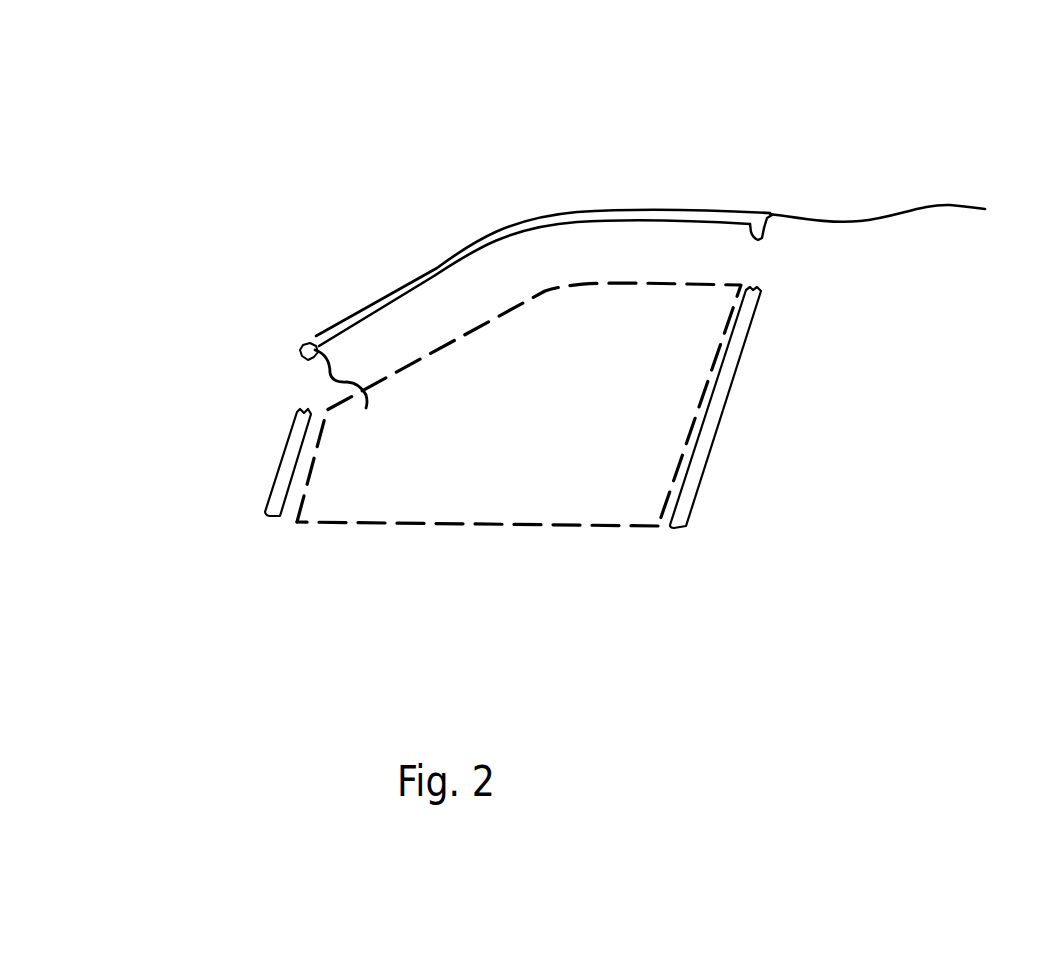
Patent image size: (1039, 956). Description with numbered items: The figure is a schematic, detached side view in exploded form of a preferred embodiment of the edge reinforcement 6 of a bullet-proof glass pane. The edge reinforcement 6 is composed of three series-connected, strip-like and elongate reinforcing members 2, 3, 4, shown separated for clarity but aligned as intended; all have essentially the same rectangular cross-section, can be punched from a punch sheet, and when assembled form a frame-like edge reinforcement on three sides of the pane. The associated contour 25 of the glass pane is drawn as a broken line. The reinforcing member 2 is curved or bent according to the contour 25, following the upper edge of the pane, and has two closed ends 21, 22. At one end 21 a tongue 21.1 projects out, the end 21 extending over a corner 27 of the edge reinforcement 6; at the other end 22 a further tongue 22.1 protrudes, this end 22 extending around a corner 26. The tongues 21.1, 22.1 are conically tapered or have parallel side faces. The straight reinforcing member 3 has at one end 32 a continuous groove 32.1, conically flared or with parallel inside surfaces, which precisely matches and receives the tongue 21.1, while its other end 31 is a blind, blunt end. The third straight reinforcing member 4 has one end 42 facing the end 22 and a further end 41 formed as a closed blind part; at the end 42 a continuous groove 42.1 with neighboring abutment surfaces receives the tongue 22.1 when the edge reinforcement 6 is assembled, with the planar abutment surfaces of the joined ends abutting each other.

The reinforcing member 2 is at (558, 222).
The end 21 is at (896, 216).
The tongue 21.1 is at (782, 252).
The end 22 is at (390, 376).
The tongue 22.1 is at (279, 351).
The contour 25 is at (510, 527).
The corner 26 is at (309, 331).
The corner 27 is at (777, 203).
The reinforcing member 3 is at (717, 431).
The end 31 is at (675, 530).
The end 32 is at (754, 309).
The groove 32.1 is at (787, 285).
The reinforcing member 4 is at (273, 488).
The end 41 is at (284, 532).
The end 42 is at (290, 422).
The groove 42.1 is at (290, 388).
The edge reinforcement 6 is at (824, 189).